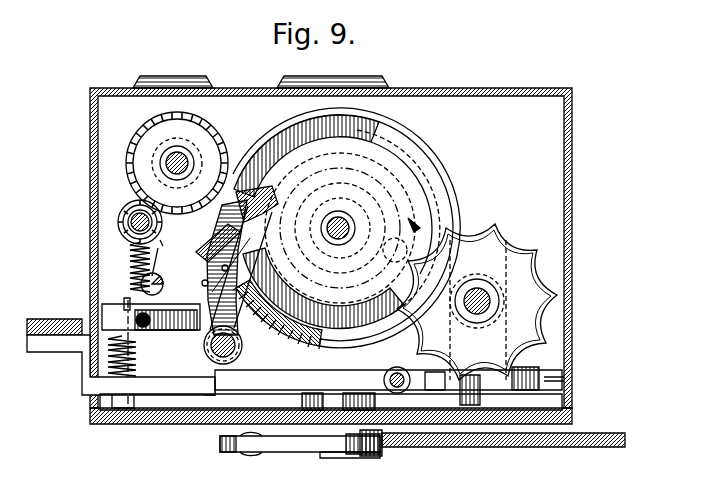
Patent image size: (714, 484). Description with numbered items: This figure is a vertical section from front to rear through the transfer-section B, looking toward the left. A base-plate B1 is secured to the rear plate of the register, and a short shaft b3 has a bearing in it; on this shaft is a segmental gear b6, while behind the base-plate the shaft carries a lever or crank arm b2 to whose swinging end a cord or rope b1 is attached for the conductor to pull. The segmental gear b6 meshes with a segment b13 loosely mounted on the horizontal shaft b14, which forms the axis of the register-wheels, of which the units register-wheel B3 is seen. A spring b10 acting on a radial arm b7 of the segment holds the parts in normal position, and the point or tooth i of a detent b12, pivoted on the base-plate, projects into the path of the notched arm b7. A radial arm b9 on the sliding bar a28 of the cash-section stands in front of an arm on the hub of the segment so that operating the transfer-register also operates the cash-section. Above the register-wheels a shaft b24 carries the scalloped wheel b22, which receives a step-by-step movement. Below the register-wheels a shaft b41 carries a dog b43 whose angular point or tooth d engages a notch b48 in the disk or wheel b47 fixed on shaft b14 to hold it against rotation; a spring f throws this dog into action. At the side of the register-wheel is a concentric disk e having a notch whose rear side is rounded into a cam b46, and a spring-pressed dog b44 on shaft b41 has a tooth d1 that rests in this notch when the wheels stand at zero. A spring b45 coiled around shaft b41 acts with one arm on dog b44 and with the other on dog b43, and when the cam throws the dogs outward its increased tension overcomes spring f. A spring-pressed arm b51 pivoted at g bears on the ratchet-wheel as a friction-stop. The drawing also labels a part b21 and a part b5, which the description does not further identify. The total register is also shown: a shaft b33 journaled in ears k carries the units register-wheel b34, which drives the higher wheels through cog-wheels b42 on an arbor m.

The transfer-section B is at (572, 213).
The base-plate B1 is at (140, 447).
The units register-wheel B3 is at (428, 158).
The shaft b33 is at (185, 156).
The units register-wheel b34 is at (177, 174).
The ears k is at (125, 206).
The cog-wheels b42 is at (118, 216).
The arbor m is at (131, 224).
The disk or wheel b47 is at (356, 148).
The concentric disk e is at (420, 179).
The angular point or tooth d is at (283, 192).
The angular point or tooth d1 is at (286, 256).
The horizontal shaft b14 is at (349, 226).
The pawl b21 is at (405, 236).
The cam b46 is at (236, 160).
The segment b13 is at (283, 323).
The notch b48 is at (250, 236).
The spring b45 is at (205, 282).
The spring-pressed dog b44 is at (210, 300).
The shaft b41 is at (208, 346).
The dog b43 is at (153, 314).
The spring-pressed arm b51 is at (164, 258).
The pivot g is at (141, 283).
The spring f is at (135, 252).
The segmental gear b6 is at (236, 350).
The sliding bar a28 is at (54, 317).
The arm b9 is at (88, 386).
The slide bar b5 is at (300, 399).
The radial arm b7 is at (396, 367).
The point or tooth i is at (435, 381).
The spring b10 is at (414, 367).
The detent b12 is at (467, 405).
The scalloped wheel b22 is at (477, 302).
The shaft b24 is at (491, 301).
The lever or crank arm b2 is at (286, 444).
The short shaft b3 is at (383, 450).
The cord or rope b1 is at (515, 442).